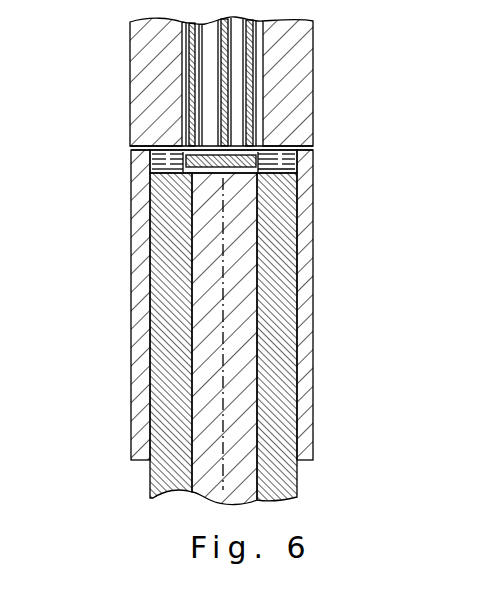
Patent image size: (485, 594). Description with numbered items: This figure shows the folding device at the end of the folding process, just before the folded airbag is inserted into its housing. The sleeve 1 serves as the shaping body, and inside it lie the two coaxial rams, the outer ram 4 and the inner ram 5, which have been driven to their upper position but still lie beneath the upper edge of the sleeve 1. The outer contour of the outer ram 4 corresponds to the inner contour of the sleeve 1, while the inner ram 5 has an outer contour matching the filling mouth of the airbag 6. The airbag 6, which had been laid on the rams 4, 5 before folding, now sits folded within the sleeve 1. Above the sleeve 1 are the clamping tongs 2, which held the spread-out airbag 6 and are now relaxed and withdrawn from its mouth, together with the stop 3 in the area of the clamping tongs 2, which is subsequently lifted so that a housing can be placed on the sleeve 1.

The sleeve 1 is at (315, 343).
The clamping tongs 2 is at (227, 93).
The stop 3 is at (303, 117).
The outer ram 4 is at (280, 212).
The inner ram 5 is at (225, 276).
The airbag 6 is at (168, 154).